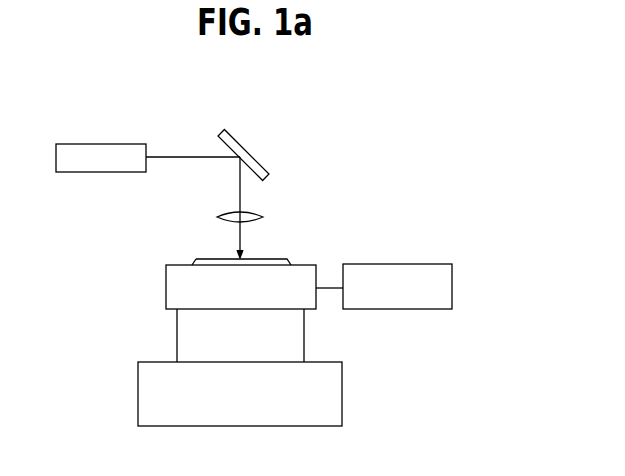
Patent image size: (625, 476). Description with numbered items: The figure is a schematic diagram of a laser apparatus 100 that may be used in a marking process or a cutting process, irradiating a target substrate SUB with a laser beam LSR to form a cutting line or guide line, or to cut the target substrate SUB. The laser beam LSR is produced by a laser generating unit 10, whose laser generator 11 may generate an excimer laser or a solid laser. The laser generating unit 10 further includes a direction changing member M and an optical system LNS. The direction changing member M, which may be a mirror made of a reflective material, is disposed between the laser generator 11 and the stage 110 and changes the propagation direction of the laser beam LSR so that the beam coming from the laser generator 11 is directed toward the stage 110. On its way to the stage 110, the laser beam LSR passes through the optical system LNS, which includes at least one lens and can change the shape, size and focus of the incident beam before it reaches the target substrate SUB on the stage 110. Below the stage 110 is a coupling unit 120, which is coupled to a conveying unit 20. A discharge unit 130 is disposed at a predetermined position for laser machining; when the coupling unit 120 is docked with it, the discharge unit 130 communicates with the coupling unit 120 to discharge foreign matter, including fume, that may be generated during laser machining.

The laser apparatus 100 is at (367, 122).
The laser generating unit 10 is at (198, 124).
The laser generator 11 is at (97, 143).
The direction changing member M is at (259, 160).
The optical system LNS is at (265, 213).
The laser beam LSR is at (258, 240).
The target substrate SUB is at (196, 259).
The stage 110 is at (166, 288).
The conveying unit 20 is at (387, 262).
The coupling unit 120 is at (177, 338).
The discharge unit 130 is at (138, 394).